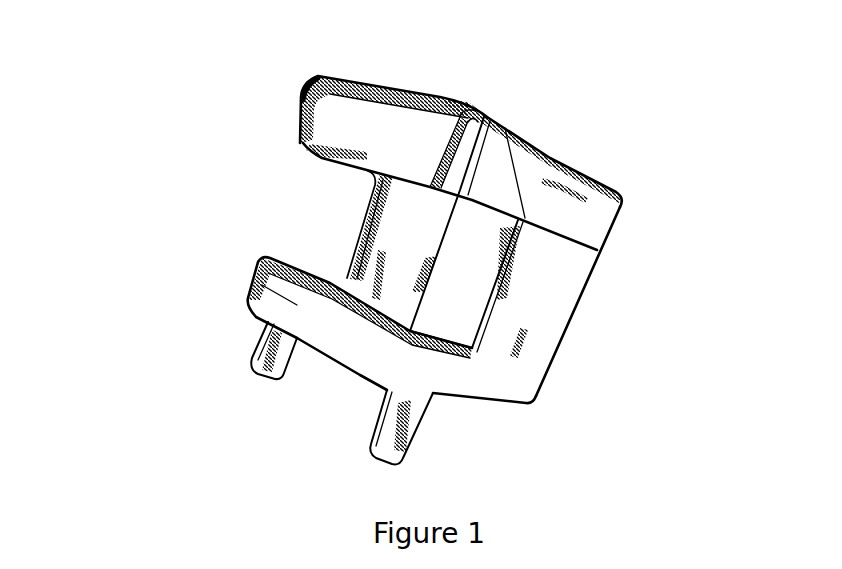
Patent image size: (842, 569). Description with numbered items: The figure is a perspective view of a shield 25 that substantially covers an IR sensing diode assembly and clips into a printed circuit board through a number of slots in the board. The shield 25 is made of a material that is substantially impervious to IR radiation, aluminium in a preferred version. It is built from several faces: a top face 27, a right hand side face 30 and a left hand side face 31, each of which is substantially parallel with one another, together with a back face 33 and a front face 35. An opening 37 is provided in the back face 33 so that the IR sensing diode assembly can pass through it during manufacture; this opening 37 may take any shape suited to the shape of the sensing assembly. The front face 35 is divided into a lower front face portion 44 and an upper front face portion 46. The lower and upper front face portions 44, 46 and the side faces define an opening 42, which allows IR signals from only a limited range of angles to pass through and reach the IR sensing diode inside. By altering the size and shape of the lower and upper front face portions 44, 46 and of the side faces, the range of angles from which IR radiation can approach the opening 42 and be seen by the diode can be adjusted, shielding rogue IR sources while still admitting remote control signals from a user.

The shield 25 is at (710, 142).
The top face 27 is at (528, 137).
The upper front face portion 46 is at (377, 131).
The left hand side face 31 is at (353, 240).
The opening 42 is at (397, 267).
The lower front face portion 44 is at (250, 288).
The front face 35 is at (343, 343).
The opening 37 is at (460, 278).
The back face 33 is at (582, 287).
The right hand side face 30 is at (520, 353).